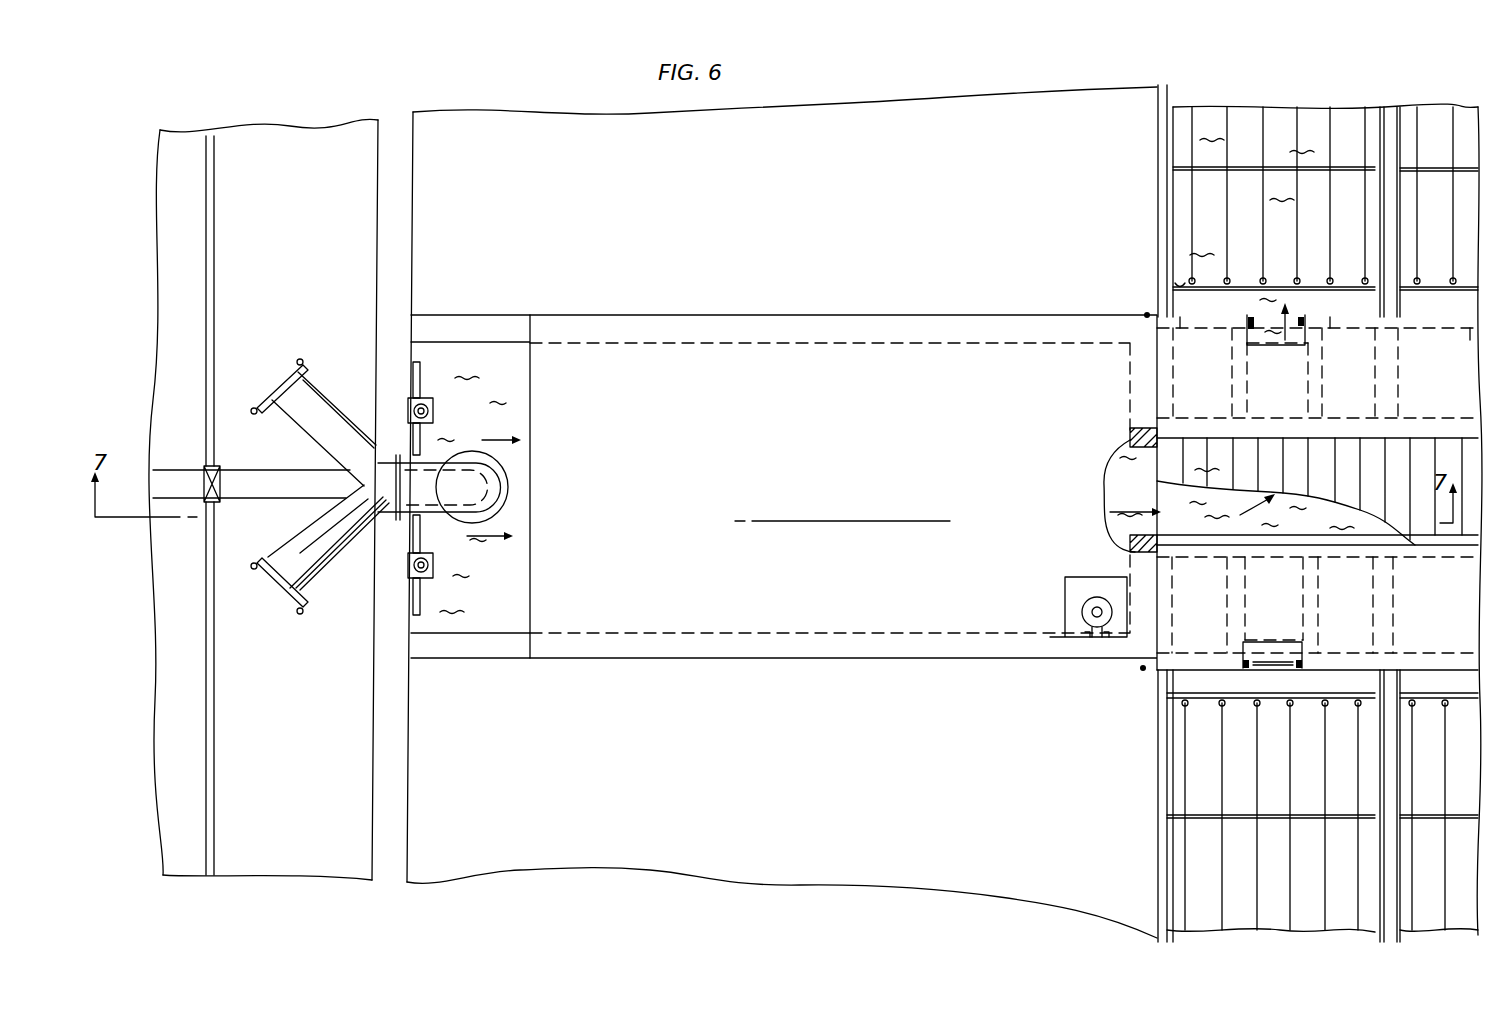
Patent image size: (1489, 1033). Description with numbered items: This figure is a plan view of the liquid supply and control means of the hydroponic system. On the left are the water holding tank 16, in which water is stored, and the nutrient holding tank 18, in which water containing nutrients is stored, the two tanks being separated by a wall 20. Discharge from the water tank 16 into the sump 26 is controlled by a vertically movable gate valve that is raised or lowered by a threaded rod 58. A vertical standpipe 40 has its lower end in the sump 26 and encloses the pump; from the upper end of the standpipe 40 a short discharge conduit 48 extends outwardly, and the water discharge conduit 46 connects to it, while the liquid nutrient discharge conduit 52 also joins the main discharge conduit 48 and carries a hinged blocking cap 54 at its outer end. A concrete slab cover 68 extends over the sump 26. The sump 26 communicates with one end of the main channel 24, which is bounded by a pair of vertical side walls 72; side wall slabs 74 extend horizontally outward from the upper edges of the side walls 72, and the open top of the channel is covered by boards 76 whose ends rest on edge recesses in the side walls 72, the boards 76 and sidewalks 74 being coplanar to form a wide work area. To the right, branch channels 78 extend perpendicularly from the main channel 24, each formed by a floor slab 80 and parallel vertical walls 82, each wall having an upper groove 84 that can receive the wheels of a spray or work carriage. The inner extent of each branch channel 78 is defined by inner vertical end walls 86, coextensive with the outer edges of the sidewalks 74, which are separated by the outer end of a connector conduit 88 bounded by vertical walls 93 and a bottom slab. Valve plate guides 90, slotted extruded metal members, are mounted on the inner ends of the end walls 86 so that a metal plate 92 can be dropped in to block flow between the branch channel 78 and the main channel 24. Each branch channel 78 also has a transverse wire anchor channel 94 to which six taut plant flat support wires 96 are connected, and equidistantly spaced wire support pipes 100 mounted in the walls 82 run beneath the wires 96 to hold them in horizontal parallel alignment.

The water holding tank 16 is at (303, 860).
The nutrient holding tank 18 is at (290, 130).
The wall 20 is at (254, 478).
The main channel 24 is at (1165, 513).
The sump 26 is at (480, 630).
The vertical standpipe 40 is at (498, 463).
The water discharge conduit 46 is at (302, 537).
The short discharge conduit 48 is at (381, 520).
The liquid nutrient discharge conduit 52 is at (326, 398).
The blocking cap 54 is at (285, 380).
The threaded rod 58 is at (434, 408).
The concrete slab cover 68 is at (830, 484).
The vertical side walls 72 is at (1140, 435).
The side wall slabs 74 is at (1165, 377).
The boards 76 is at (1348, 483).
The branch channels 78 is at (1330, 78).
The floor slab 80 is at (1300, 228).
The vertical walls 82 is at (1158, 83).
The upper groove 84 is at (1175, 103).
The inner vertical end walls 86 is at (1185, 322).
The connector conduit 88 is at (1280, 335).
The valve plate guides 90 is at (1247, 340).
The metal plate 92 is at (1267, 672).
The vertical walls 93 is at (1300, 587).
The wire anchor channel 94 is at (1182, 280).
The plant flat support wires 96 is at (1297, 127).
The wire support pipes 100 is at (1238, 817).